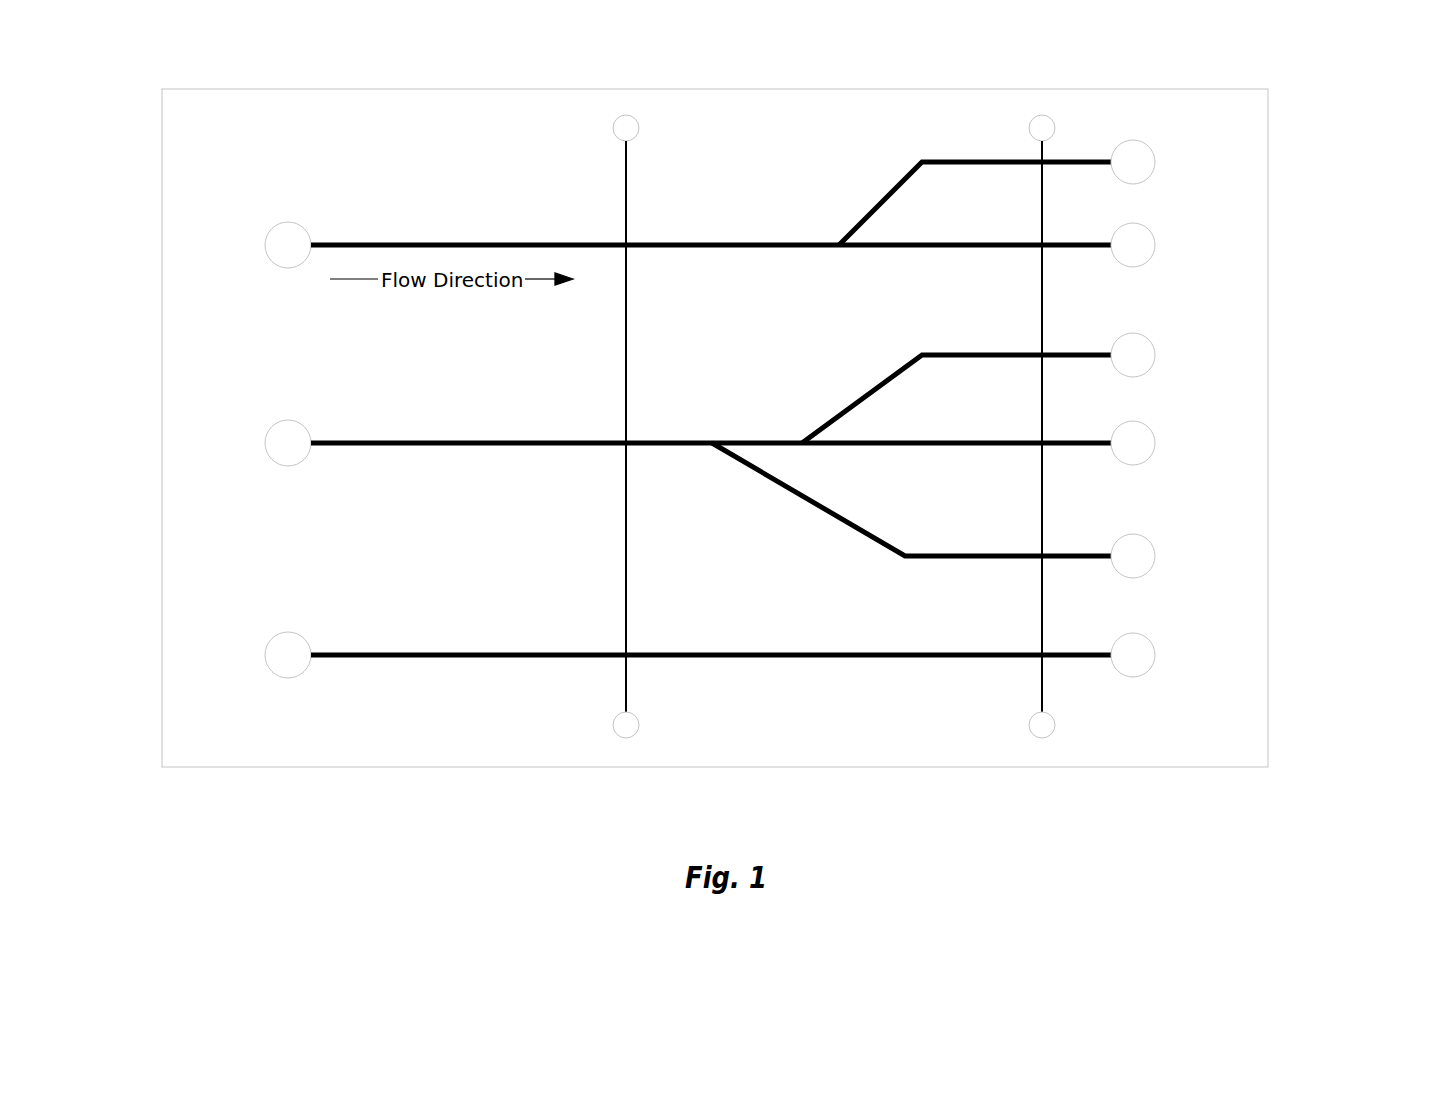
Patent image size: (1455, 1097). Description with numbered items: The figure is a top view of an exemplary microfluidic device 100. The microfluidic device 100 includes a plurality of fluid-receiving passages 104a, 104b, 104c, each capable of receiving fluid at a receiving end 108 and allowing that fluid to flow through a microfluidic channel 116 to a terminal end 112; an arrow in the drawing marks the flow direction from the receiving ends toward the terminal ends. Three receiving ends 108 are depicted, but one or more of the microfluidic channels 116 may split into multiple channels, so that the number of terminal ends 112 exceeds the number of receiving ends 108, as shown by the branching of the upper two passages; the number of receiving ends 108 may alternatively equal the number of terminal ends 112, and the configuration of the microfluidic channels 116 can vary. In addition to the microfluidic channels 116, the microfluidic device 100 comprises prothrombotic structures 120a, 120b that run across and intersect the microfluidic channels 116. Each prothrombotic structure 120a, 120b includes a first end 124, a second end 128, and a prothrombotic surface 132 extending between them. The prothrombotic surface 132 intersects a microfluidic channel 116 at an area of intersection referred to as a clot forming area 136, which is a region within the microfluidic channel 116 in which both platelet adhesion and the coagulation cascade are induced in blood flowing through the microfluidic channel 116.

The microfluidic device 100 is at (799, 396).
The fluid-receiving passage 104a is at (660, 196).
The fluid-receiving passage 104b is at (627, 455).
The fluid-receiving passage 104c is at (627, 632).
The receiving end 108 is at (274, 193).
The terminal end 112 is at (1166, 207).
The microfluidic channel 116 is at (711, 200).
The prothrombotic structure 120a is at (610, 389).
The prothrombotic structure 120b is at (1000, 381).
The first end 124 is at (659, 136).
The second end 128 is at (659, 733).
The prothrombotic surface 132 is at (658, 292).
The clot forming area 136 is at (667, 577).